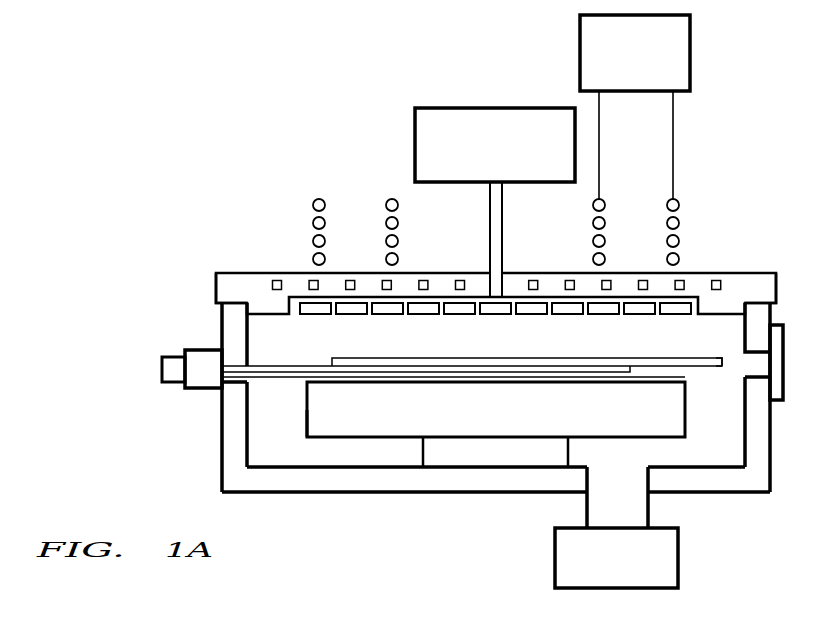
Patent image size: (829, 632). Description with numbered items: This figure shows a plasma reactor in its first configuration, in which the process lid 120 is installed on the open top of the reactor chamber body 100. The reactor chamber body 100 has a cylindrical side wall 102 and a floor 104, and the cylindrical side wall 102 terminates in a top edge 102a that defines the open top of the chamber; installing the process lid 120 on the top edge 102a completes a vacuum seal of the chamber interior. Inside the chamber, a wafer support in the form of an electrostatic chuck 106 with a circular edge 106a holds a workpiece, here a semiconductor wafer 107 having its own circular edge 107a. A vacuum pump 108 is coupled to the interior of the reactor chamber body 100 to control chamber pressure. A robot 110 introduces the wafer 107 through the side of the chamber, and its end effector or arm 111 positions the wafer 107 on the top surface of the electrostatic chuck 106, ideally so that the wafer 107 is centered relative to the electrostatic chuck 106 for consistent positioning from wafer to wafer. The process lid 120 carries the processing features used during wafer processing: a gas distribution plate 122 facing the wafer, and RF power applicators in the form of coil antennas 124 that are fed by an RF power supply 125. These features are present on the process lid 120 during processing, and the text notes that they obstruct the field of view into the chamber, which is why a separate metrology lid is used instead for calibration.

The reactor chamber body 100 is at (190, 323).
The cylindrical side wall 102 is at (228, 408).
The top edge 102a is at (233, 303).
The floor 104 is at (383, 478).
The electrostatic chuck 106 is at (292, 413).
The circular edge 106a is at (307, 427).
The semiconductor wafer 107 is at (435, 360).
The circular edge 107a is at (724, 363).
The vacuum pump 108 is at (556, 567).
The robot 110 is at (165, 367).
The end effector or arm 111 is at (477, 372).
The process lid 120 is at (246, 163).
The gas distribution plate 122 is at (545, 297).
The coil antennas 124 is at (672, 210).
The RF power supply 125 is at (592, 38).